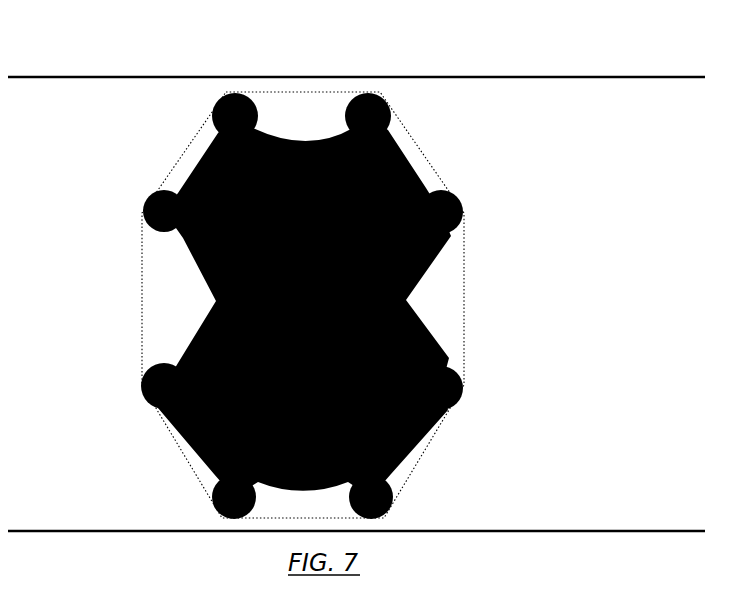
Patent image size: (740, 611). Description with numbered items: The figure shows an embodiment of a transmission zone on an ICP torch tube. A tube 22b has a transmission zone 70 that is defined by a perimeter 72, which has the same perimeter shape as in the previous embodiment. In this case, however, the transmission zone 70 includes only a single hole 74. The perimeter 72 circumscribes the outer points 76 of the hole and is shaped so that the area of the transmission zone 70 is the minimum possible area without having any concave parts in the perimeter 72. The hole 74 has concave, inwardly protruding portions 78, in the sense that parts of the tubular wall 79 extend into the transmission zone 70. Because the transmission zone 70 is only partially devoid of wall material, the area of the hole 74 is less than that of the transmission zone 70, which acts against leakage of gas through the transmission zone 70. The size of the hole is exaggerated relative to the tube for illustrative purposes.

The transmission zone 70 is at (398, 148).
The perimeter 72 is at (455, 320).
The hole 74 is at (218, 83).
The outer points 76 is at (147, 182).
The concave/inwardly protruding portion 78 is at (187, 143).
The tubular wall 79 is at (546, 368).
The tube 22b is at (520, 523).